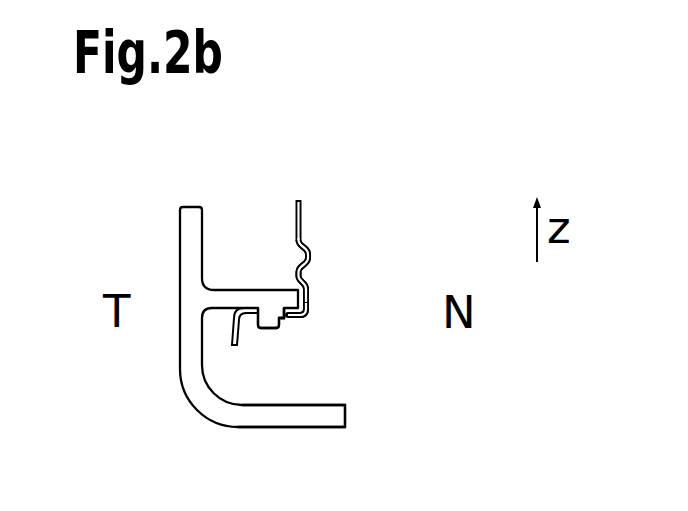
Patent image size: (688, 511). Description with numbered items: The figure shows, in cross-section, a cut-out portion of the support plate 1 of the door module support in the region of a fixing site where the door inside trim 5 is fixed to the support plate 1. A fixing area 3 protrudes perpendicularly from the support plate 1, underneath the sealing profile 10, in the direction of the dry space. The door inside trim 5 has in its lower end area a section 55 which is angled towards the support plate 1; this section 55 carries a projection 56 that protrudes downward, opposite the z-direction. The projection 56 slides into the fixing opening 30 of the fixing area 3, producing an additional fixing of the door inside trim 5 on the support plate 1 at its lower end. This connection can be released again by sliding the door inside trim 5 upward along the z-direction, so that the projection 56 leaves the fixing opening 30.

The support plate 1 is at (302, 200).
The sealing profile 10 is at (308, 268).
The fixing area 3 is at (287, 317).
The fixing opening 30 is at (283, 322).
The section 55 is at (243, 293).
The projection 56 is at (265, 332).
The door inside trim 5 is at (298, 415).